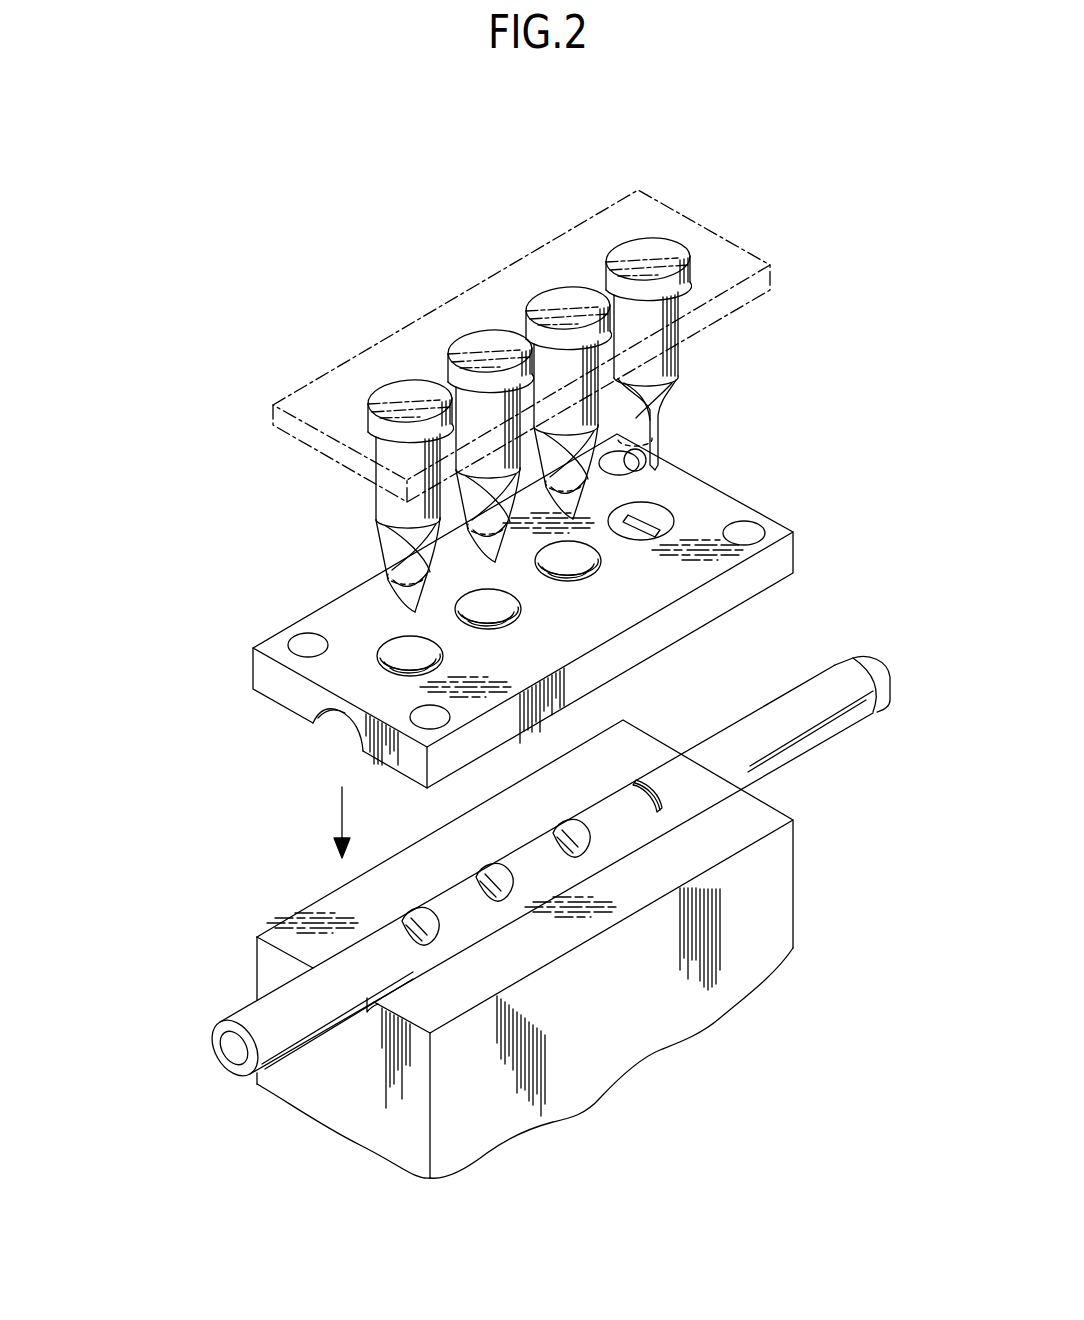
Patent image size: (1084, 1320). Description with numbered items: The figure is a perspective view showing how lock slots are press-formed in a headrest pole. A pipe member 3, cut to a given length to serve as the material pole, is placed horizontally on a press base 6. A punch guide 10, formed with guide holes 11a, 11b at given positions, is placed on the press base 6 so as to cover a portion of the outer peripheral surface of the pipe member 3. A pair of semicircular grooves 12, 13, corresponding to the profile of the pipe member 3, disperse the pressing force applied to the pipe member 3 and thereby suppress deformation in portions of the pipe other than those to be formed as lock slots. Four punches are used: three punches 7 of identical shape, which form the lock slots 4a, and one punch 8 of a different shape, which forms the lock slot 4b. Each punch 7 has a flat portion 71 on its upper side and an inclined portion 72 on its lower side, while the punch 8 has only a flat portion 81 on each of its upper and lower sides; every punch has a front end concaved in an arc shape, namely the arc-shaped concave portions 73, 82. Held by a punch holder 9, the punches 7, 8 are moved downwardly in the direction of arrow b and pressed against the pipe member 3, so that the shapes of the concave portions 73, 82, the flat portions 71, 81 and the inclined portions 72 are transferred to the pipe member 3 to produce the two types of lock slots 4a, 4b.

The pipe member 3 is at (553, 870).
The lock slots 4a is at (420, 915).
The lock slot 4b is at (660, 793).
The press base 6 is at (555, 982).
The punches 7 is at (457, 439).
The punch 8 is at (636, 313).
The punch holder 9 is at (750, 257).
The punch guide 10 is at (554, 611).
The guide holes 11a is at (397, 640).
The guide hole 11b is at (660, 527).
The semicircular groove 12 is at (343, 732).
The semicircular groove 13 is at (367, 1003).
The flat portion 71 is at (366, 559).
The inclined portion 72 is at (444, 624).
The arc-shaped concave portion 73 is at (371, 565).
The flat portion 81 is at (662, 437).
The arc-shaped concave portion 82 is at (628, 470).
The arrow b is at (338, 822).